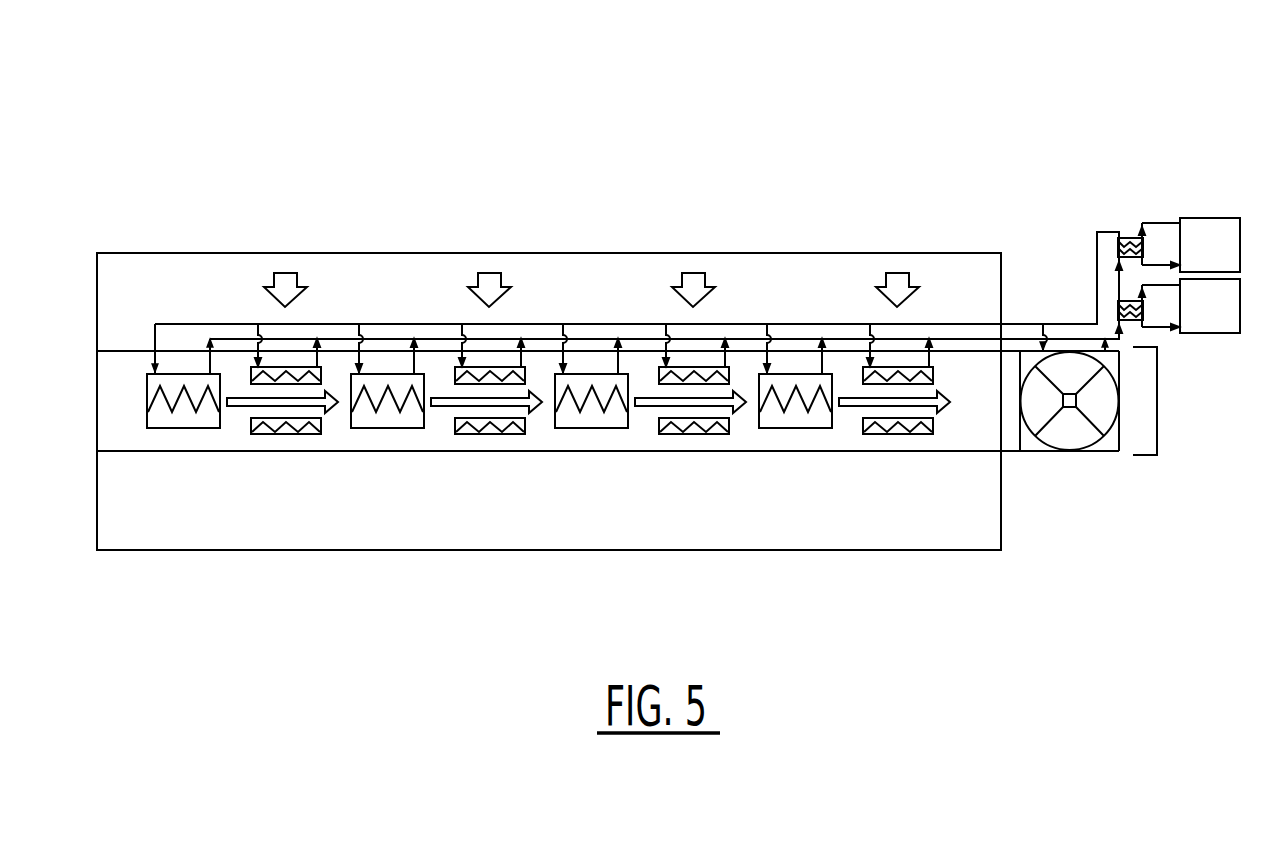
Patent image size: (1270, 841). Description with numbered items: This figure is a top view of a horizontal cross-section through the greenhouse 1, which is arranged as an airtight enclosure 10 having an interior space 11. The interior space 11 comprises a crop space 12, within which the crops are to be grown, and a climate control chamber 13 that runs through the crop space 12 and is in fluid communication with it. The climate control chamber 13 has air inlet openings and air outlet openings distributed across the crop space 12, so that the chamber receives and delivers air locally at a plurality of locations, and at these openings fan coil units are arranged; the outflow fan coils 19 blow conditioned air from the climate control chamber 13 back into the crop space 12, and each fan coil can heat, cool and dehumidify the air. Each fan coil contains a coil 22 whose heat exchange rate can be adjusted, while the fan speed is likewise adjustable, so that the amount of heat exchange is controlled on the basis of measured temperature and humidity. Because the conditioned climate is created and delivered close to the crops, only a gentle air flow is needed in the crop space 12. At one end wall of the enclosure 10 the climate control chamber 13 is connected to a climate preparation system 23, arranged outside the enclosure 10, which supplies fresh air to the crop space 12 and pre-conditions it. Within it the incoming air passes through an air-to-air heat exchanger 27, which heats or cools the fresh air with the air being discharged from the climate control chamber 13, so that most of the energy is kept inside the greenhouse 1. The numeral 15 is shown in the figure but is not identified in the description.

The greenhouse 1 is at (634, 92).
The airtight enclosure 10 is at (644, 216).
The interior space 11 is at (155, 295).
The crop space 12 is at (359, 287).
The climate control chamber 13 is at (183, 318).
The conveyor 15 is at (215, 484).
The outflow fan coil 19 is at (792, 465).
The coil 22 is at (706, 335).
The climate preparation system 23 is at (1157, 402).
The air-to-air heat exchanger 27 is at (1070, 404).